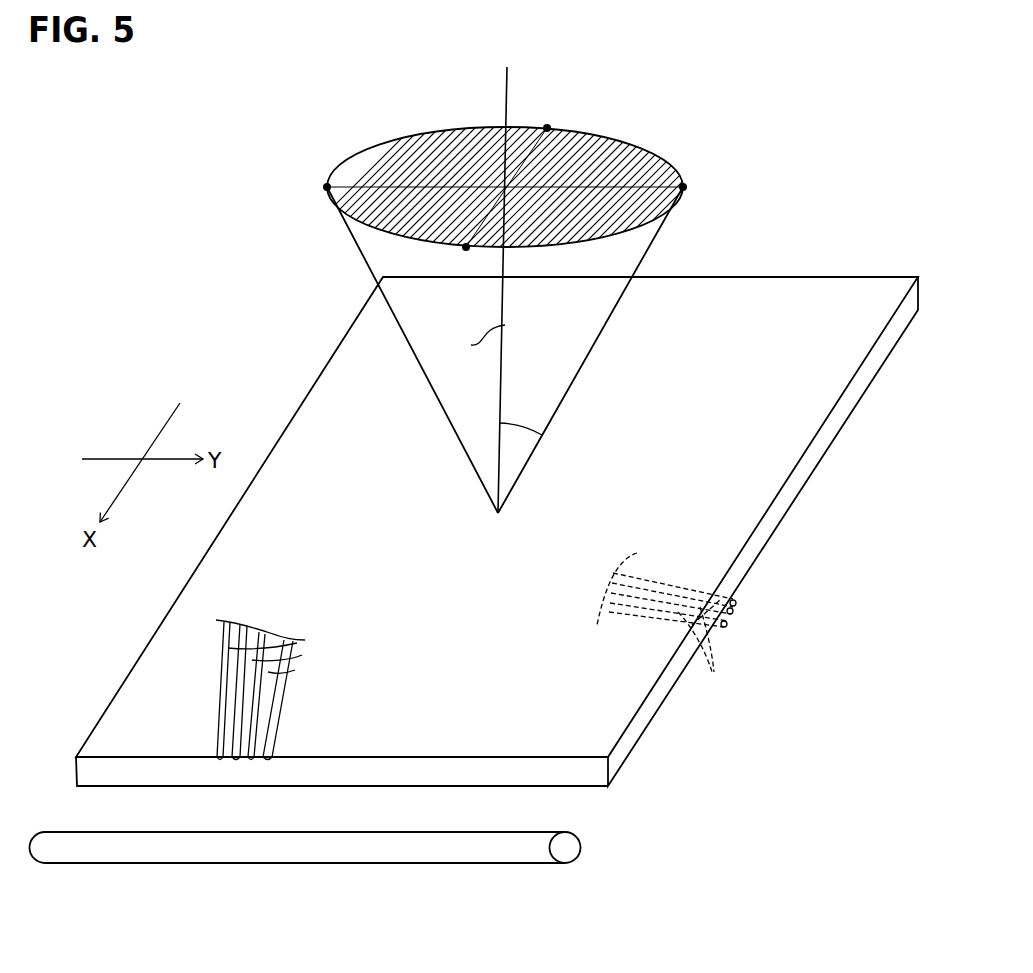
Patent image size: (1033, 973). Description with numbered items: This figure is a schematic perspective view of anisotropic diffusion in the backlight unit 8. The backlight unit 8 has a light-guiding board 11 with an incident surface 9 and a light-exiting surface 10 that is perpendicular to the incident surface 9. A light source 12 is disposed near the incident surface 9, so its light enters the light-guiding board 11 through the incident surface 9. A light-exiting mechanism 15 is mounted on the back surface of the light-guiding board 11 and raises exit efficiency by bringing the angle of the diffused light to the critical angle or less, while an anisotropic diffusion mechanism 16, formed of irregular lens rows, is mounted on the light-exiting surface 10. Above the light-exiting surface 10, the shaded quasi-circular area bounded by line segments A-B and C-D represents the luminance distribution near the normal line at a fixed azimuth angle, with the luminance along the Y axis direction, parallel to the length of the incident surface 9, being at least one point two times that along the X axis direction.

The backlight unit 8 is at (170, 296).
The incident surface 9 is at (521, 776).
The light-exiting surface 10 is at (368, 528).
The light-guiding board 11 is at (802, 470).
The light source 12 is at (296, 850).
The light-exiting mechanism 15 is at (667, 628).
The anisotropic diffusion mechanism 16 is at (297, 643).